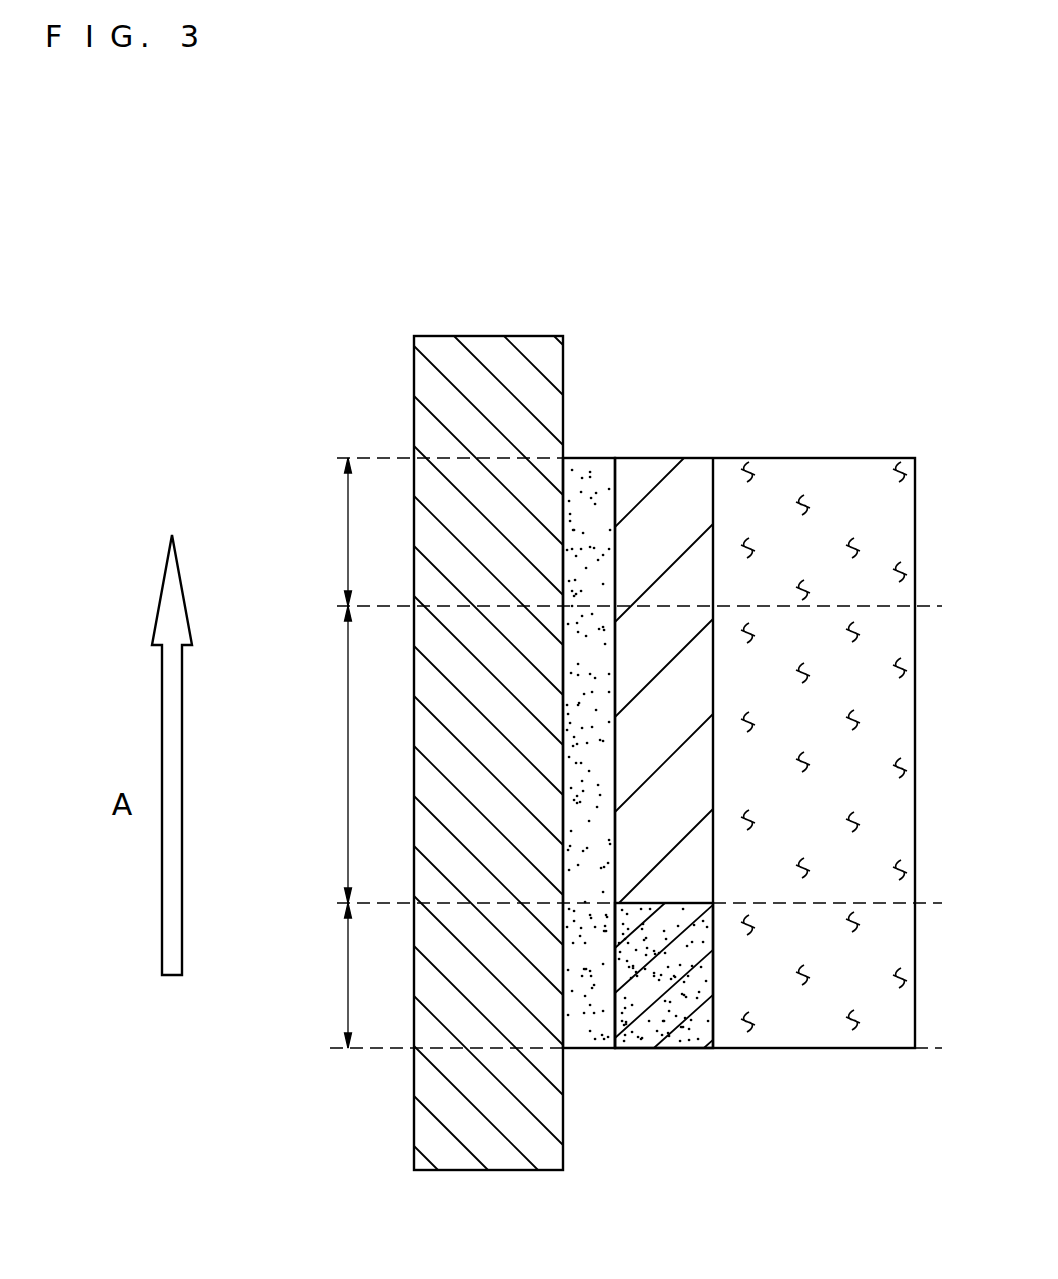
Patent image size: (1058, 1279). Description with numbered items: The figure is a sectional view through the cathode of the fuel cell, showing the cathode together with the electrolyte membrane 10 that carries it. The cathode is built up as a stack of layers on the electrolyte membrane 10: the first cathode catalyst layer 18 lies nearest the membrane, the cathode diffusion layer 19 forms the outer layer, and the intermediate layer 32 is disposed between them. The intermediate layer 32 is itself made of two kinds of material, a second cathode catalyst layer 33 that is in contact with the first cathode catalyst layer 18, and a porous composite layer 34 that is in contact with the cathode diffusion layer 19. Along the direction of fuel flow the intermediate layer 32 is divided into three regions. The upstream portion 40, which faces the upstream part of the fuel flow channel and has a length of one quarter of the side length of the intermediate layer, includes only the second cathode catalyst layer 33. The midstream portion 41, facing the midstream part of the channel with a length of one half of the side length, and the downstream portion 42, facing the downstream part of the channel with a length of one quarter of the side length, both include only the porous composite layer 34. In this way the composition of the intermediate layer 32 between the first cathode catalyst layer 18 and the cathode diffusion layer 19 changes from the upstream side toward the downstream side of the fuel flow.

The electrolyte membrane 10 is at (497, 352).
The first cathode catalyst layer 18 is at (585, 473).
The cathode diffusion layer 19 is at (835, 480).
The intermediate layer 32 is at (671, 1040).
The second cathode catalyst layer 33 is at (728, 1135).
The porous composite layer 34 is at (702, 1100).
The upstream portion 40 is at (323, 975).
The midstream portion 41 is at (322, 754).
The downstream portion 42 is at (322, 532).